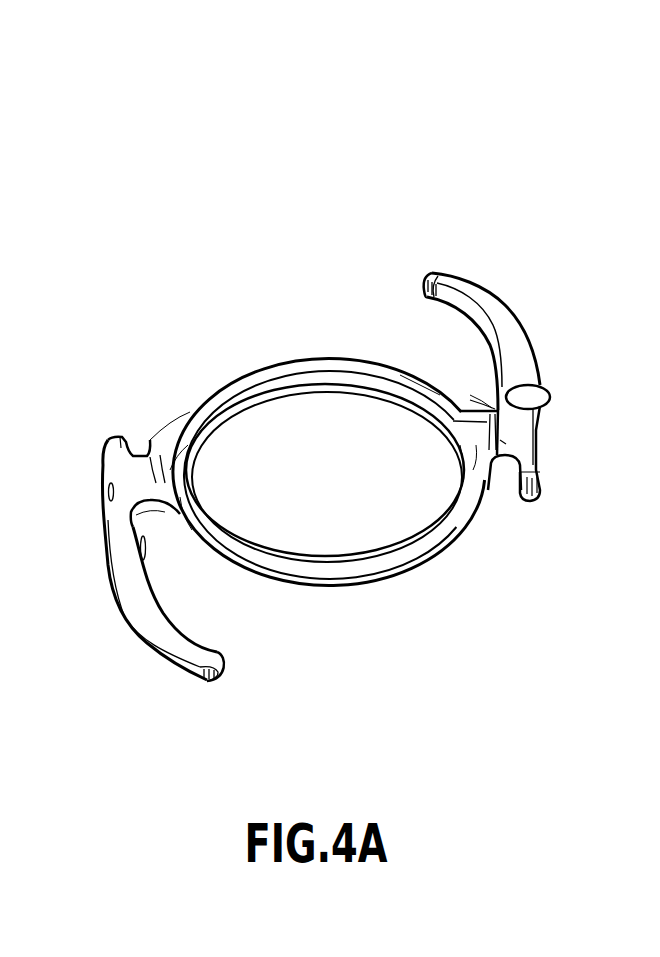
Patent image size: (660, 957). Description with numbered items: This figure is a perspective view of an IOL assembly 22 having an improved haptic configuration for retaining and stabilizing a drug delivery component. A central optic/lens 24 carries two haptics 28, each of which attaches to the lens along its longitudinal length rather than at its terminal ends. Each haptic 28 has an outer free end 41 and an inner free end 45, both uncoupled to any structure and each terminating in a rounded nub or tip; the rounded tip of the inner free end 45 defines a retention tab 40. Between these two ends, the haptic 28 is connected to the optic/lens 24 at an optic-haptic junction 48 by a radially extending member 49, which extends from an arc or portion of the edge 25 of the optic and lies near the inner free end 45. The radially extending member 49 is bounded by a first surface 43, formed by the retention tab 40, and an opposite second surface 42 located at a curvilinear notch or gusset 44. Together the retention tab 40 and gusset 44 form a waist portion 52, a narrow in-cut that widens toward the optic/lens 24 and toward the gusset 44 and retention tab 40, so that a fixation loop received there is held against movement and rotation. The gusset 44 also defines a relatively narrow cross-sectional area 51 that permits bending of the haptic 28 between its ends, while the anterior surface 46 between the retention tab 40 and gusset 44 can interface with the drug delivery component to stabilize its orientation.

The IOL assembly 22 is at (225, 278).
The optic/lens 24 is at (296, 370).
The edge 25 is at (383, 570).
The haptic 28 is at (484, 262).
The retention tab 40 is at (107, 428).
The outer free end 41 is at (432, 275).
The second surface 42 is at (497, 408).
The first surface 43 is at (139, 452).
The gusset 44 is at (157, 538).
The inner free end 45 is at (128, 440).
The anterior surface 46 is at (147, 483).
The optic-haptic junction 48 is at (176, 458).
The radially extending member 49 is at (157, 440).
The narrow cross-sectional area 51 is at (550, 395).
The waist portion 52 is at (505, 442).